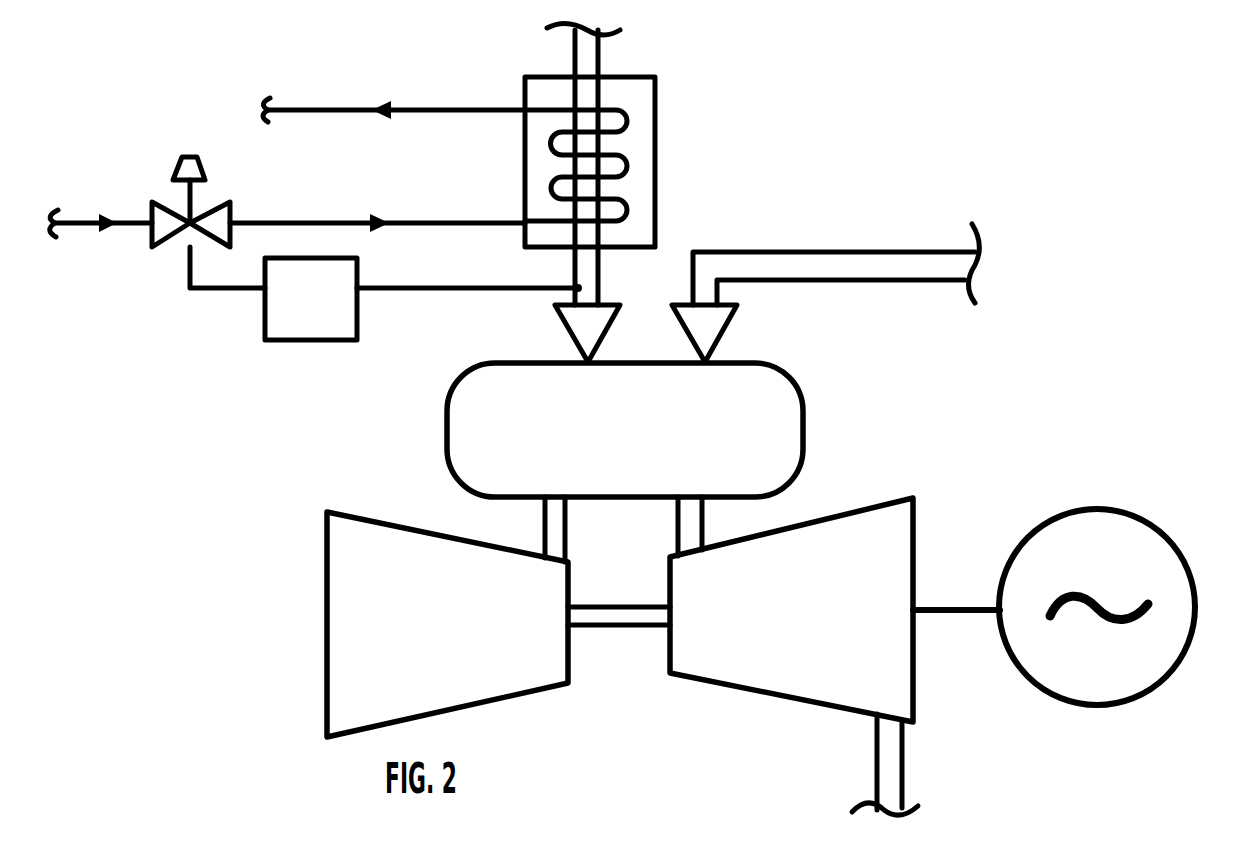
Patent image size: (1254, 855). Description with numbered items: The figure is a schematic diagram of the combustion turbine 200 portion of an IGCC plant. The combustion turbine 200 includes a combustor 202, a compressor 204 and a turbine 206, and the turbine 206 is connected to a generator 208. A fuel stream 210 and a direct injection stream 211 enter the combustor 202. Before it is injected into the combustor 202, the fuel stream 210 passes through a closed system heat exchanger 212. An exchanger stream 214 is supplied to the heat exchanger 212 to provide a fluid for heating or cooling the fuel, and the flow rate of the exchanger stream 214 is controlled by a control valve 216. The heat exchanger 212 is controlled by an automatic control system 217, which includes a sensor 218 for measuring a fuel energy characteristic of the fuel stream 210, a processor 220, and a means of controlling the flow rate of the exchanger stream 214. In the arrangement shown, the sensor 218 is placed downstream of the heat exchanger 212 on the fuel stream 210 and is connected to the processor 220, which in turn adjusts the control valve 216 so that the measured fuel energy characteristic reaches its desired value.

The combustion turbine 200 is at (639, 775).
The combustor 202 is at (788, 376).
The compressor 204 is at (355, 620).
The turbine 206 is at (888, 499).
The generator 208 is at (1195, 567).
The fuel stream 210 is at (600, 60).
The direct injection stream 211 is at (847, 250).
The closed system heat exchanger 212 is at (664, 147).
The exchanger stream 214 is at (480, 107).
The control valve 216 is at (207, 166).
The automatic control system 217 is at (365, 270).
The sensor 218 is at (575, 287).
The processor 220 is at (311, 299).